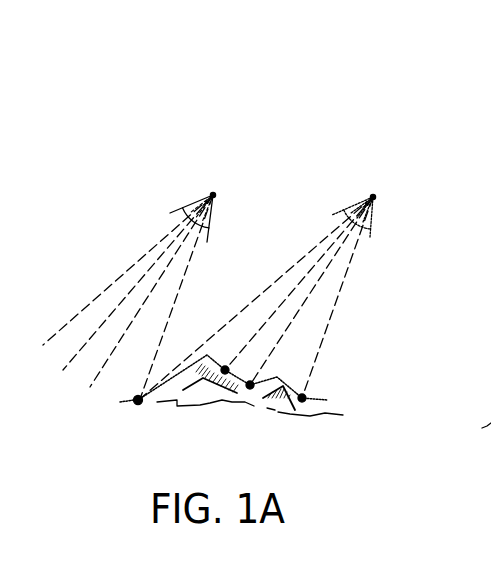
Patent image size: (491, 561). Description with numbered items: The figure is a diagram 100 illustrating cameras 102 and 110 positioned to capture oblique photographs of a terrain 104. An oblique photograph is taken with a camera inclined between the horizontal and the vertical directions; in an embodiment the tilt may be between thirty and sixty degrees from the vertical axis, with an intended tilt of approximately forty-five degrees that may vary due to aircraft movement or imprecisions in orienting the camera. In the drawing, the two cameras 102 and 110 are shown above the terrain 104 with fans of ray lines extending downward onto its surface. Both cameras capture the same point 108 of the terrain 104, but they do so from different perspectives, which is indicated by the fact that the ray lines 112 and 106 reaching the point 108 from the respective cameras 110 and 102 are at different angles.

The diagram 100 is at (369, 70).
The camera 102 is at (373, 197).
The terrain 104 is at (330, 398).
The ray line 106 is at (302, 263).
The point 108 is at (136, 403).
The camera 110 is at (213, 195).
The ray line 112 is at (177, 298).